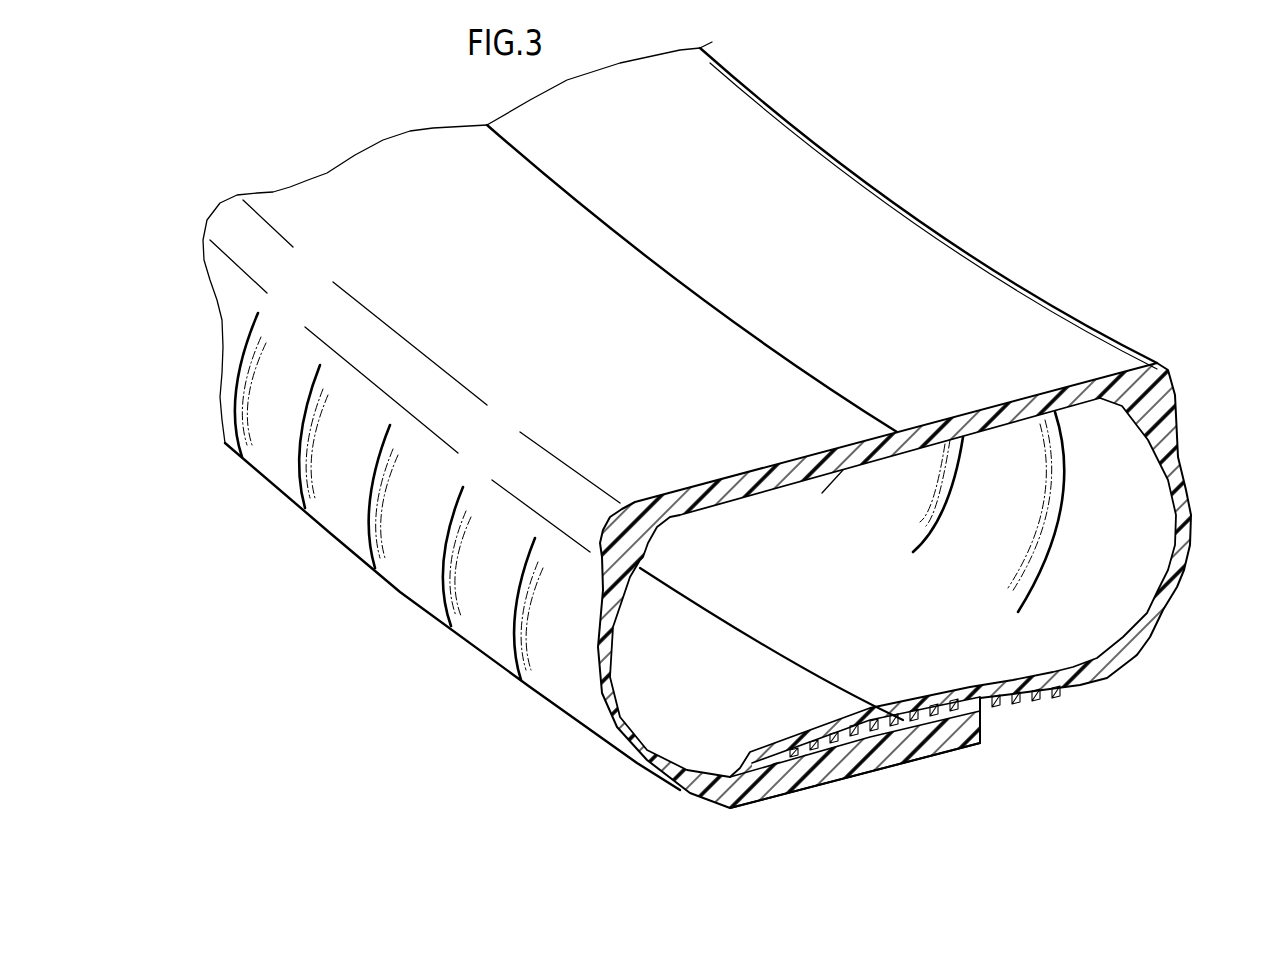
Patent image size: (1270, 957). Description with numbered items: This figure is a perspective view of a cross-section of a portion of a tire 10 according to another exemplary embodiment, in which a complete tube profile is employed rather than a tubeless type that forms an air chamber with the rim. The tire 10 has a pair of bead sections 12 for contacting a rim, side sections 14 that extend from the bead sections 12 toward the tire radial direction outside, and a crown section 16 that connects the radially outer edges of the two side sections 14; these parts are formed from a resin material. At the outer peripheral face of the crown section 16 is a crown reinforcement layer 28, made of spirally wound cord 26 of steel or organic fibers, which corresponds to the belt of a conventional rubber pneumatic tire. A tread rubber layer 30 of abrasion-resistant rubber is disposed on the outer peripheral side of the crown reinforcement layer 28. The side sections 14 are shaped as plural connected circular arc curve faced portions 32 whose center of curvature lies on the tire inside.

The tire 10 is at (977, 174).
The bead sections 12 is at (232, 292).
The side sections 14 is at (1192, 517).
The crown section 16 is at (1082, 690).
The cord 26 is at (807, 790).
The crown reinforcement layer 28 is at (888, 780).
The tread rubber layer 30 is at (697, 802).
The circular arc curve faced portions 32 is at (273, 413).